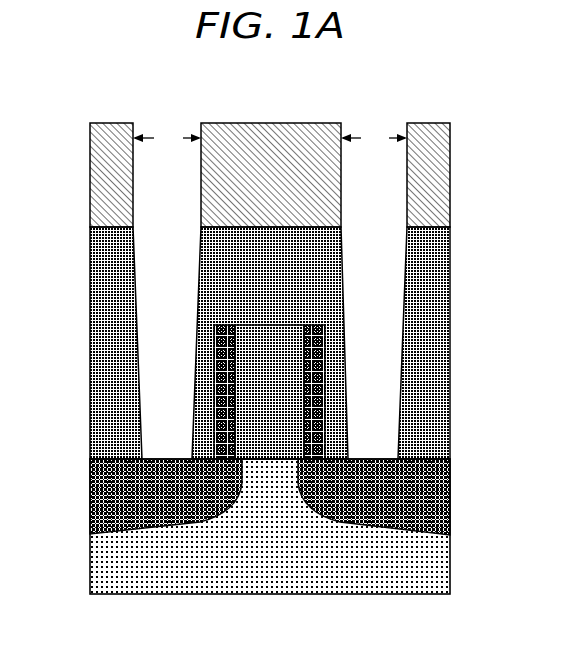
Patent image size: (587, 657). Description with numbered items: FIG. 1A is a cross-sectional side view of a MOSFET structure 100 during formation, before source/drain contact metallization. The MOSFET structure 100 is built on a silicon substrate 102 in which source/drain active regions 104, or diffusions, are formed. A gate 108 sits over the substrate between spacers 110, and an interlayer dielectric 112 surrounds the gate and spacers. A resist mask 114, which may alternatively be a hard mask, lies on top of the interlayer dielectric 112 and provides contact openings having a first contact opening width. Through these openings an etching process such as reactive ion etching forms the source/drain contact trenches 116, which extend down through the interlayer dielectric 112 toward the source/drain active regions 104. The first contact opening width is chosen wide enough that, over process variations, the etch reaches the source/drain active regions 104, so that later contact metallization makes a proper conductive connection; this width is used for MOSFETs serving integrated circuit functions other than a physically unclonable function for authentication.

The MOSFET structure 100 is at (252, 84).
The silicon substrate 102 is at (450, 568).
The source/drain active regions 104 is at (90, 495).
The gate 108 is at (252, 344).
The spacers 110 is at (224, 383).
The interlayer dielectric 112 is at (450, 296).
The resist mask 114 is at (450, 214).
The source/drain contact trenches 116 is at (158, 177).